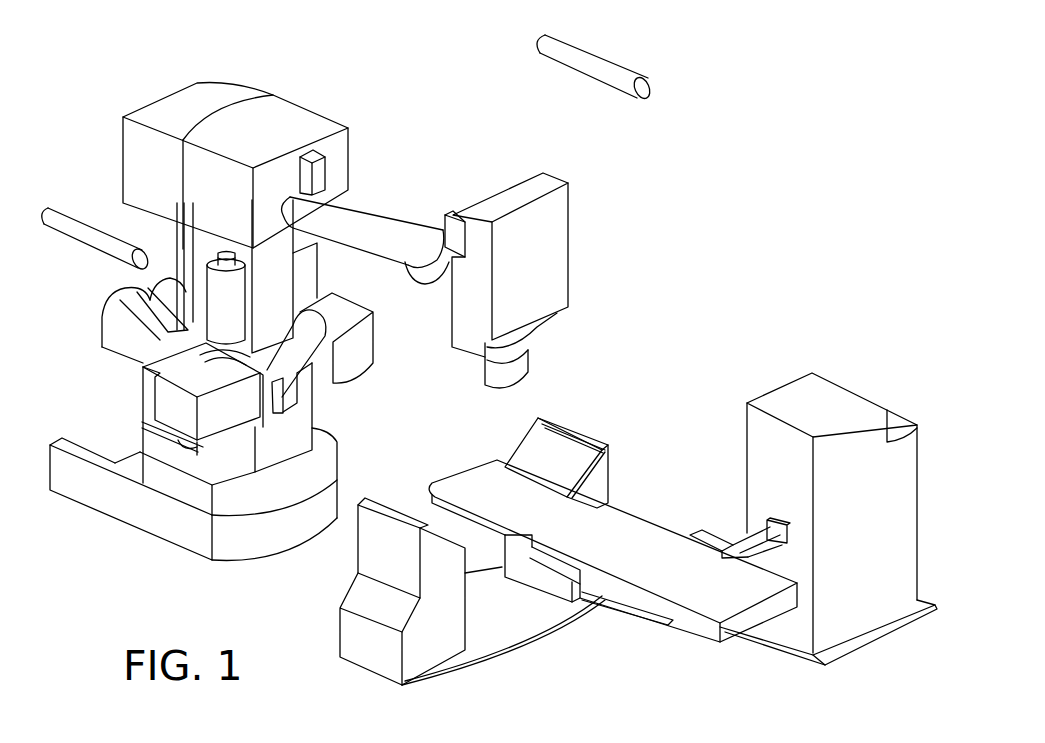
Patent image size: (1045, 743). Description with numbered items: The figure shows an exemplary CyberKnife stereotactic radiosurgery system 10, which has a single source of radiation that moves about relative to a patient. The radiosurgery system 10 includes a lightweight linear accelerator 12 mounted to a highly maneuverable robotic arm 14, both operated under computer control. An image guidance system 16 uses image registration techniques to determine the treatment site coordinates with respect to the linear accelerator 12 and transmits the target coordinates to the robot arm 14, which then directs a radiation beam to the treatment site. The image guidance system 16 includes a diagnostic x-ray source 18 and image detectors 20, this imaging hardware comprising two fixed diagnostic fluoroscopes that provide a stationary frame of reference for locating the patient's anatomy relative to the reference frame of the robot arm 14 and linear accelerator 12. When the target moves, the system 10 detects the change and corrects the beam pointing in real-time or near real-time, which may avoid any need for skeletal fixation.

The stereotactic radiosurgery system 10 is at (737, 171).
The linear accelerator 12 is at (570, 212).
The robotic arm 14 is at (290, 68).
The image guidance system 16 is at (612, 404).
The diagnostic x-ray source 18 is at (580, 46).
The image detectors 20 is at (387, 507).